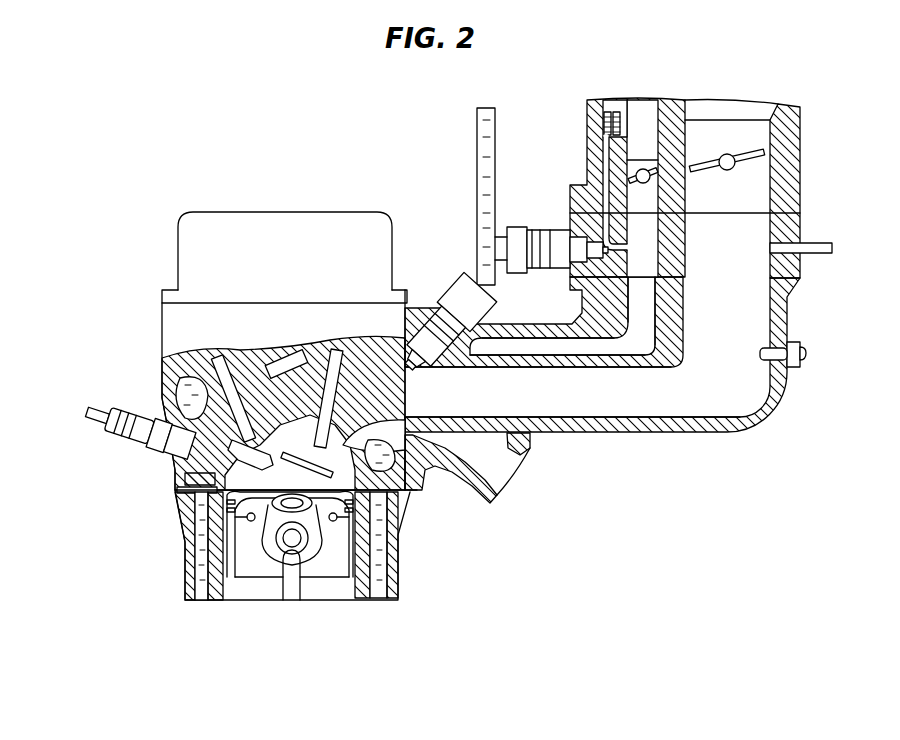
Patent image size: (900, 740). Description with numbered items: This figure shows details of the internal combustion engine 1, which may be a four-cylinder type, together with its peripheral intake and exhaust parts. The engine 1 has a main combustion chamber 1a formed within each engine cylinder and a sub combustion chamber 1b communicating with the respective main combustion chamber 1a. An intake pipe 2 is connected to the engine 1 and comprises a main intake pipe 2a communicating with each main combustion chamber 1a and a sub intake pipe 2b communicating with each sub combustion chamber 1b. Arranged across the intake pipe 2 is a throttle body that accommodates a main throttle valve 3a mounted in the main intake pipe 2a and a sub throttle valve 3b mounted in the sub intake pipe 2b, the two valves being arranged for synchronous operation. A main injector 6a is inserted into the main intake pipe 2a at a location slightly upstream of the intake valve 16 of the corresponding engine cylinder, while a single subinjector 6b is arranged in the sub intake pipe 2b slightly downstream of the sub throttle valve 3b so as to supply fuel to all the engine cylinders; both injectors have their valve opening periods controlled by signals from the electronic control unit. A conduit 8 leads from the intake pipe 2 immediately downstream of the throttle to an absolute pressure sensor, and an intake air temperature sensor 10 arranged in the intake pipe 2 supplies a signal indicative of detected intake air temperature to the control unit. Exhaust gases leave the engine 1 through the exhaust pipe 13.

The internal combustion engine 1 is at (249, 408).
The main combustion chamber 1a is at (185, 518).
The sub combustion chamber 1b is at (180, 481).
The intake pipe 2 is at (815, 313).
The main intake pipe 2a is at (550, 404).
The sub intake pipe 2b is at (548, 350).
The main throttle valve 3a is at (765, 170).
The sub throttle valve 3b is at (641, 184).
The main injector 6a is at (442, 327).
The subinjector 6b is at (556, 228).
The conduit 8 is at (826, 243).
The intake air temperature sensor 10 is at (797, 368).
The exhaust pipe 13 is at (458, 472).
The intake valve 16 is at (322, 446).